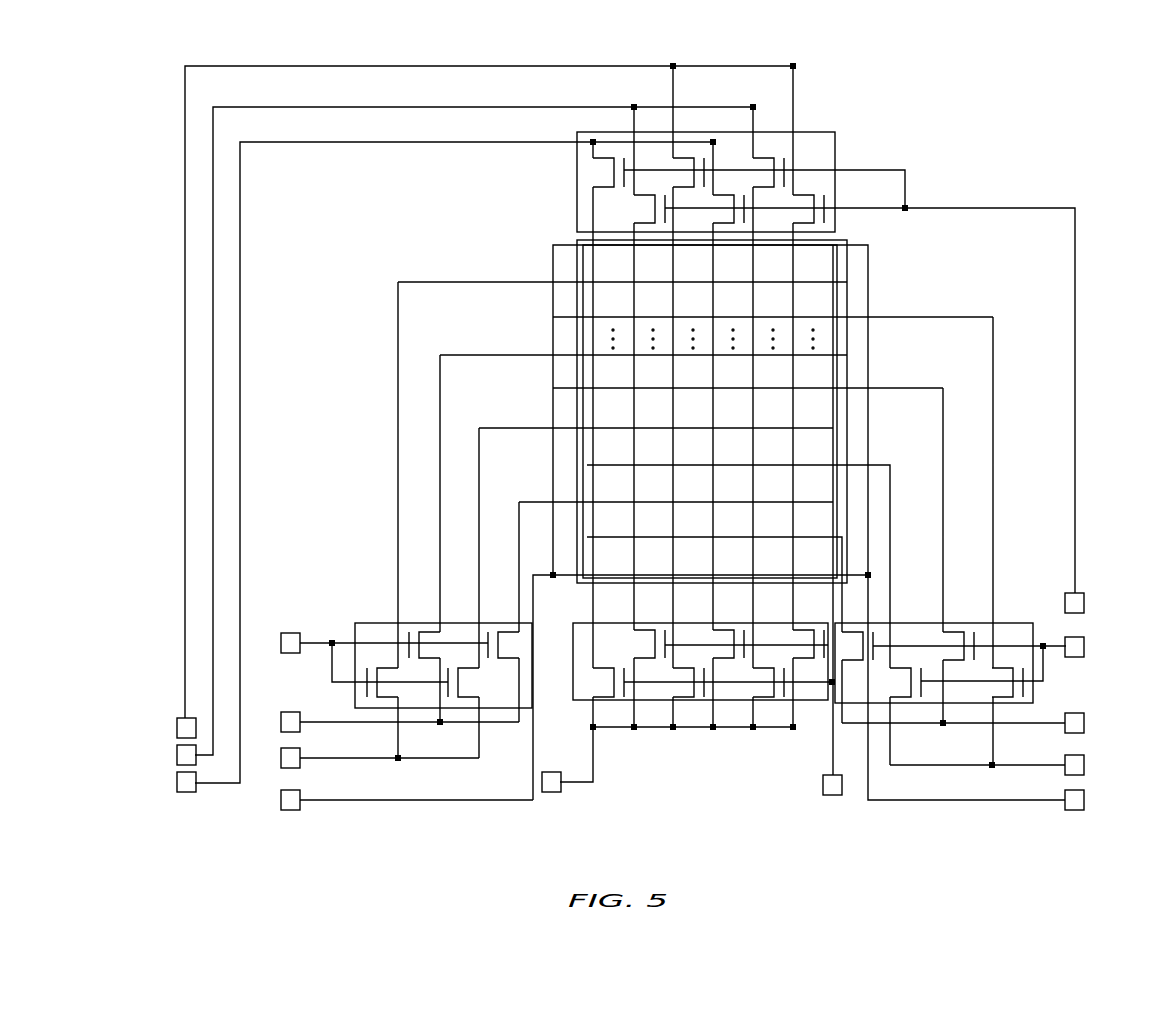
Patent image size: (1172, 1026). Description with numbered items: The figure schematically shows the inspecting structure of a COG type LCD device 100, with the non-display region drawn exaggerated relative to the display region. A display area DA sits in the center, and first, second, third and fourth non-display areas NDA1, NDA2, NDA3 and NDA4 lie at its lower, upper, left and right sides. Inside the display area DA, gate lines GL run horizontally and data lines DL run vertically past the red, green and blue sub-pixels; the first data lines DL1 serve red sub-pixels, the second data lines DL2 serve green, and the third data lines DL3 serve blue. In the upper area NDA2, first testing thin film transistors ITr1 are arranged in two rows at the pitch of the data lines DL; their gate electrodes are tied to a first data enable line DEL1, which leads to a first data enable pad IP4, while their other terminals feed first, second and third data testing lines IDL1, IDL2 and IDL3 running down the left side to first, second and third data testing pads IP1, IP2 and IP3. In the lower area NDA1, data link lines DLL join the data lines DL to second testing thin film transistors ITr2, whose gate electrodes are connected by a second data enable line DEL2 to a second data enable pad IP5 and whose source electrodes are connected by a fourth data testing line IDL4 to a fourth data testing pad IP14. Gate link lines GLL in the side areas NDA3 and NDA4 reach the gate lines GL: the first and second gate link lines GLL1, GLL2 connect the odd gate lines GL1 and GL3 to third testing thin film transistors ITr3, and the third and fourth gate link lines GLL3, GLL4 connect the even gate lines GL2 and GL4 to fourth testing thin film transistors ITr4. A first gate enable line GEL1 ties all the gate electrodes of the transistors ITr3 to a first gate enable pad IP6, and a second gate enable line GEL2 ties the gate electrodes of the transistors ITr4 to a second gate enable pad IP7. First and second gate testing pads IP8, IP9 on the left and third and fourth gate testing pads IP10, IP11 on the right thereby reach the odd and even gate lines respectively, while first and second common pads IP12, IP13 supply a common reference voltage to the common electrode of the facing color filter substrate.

The COG type LCD device 100 is at (975, 140).
The first non-display area NDA1 is at (650, 851).
The second non-display area NDA2 is at (648, 34).
The third non-display area NDA3 is at (142, 537).
The fourth non-display area NDA4 is at (1117, 367).
The display area DA is at (842, 410).
The data lines DL is at (437, 310).
The first data lines DL1 is at (593, 272).
The second data lines DL2 is at (634, 340).
The third data lines DL3 is at (673, 378).
The data link lines DLL is at (588, 600).
The gate lines GL is at (950, 357).
The first odd gate lines GL1 is at (832, 270).
The first even gate lines GL2 is at (832, 305).
The second odd gate lines GL3 is at (832, 345).
The second even gate lines GL4 is at (832, 378).
The gate link lines GLL is at (292, 428).
The first gate link line GLL1 is at (398, 432).
The second gate link line GLL2 is at (440, 535).
The third gate link lines GLL3 is at (993, 453).
The fourth gate link lines GLL4 is at (943, 544).
The first data testing line IDL1 is at (240, 265).
The second data testing line IDL2 is at (213, 328).
The third data testing line IDL3 is at (185, 402).
The fourth data testing line IDL4 is at (596, 758).
The first testing thin film transistors ITr1 is at (837, 147).
The second testing thin film transistors ITr2 is at (748, 701).
The third testing thin film transistors ITr3 is at (355, 628).
The fourth testing thin film transistors ITr4 is at (1033, 700).
The first data enable line DEL1 is at (1078, 577).
The second data enable line DEL2 is at (732, 701).
The first gate enable line GEL1 is at (320, 650).
The second gate enable line GEL2 is at (1045, 664).
The first data testing pad IP1 is at (177, 728).
The second data testing pad IP2 is at (177, 755).
The third data testing pad IP3 is at (177, 781).
The first data enable pad IP4 is at (1086, 603).
The second data enable pad IP5 is at (832, 796).
The first gate enable pad IP6 is at (282, 654).
The second gate enable pad IP7 is at (1086, 647).
The first gate testing pad IP8 is at (300, 768).
The second gate testing pad IP9 is at (300, 732).
The third gate testing pad IP10 is at (1086, 765).
The fourth gate testing pad IP11 is at (1086, 723).
The first common pad IP12 is at (290, 811).
The second common pad IP13 is at (1086, 800).
The fourth data testing pad IP14 is at (548, 793).